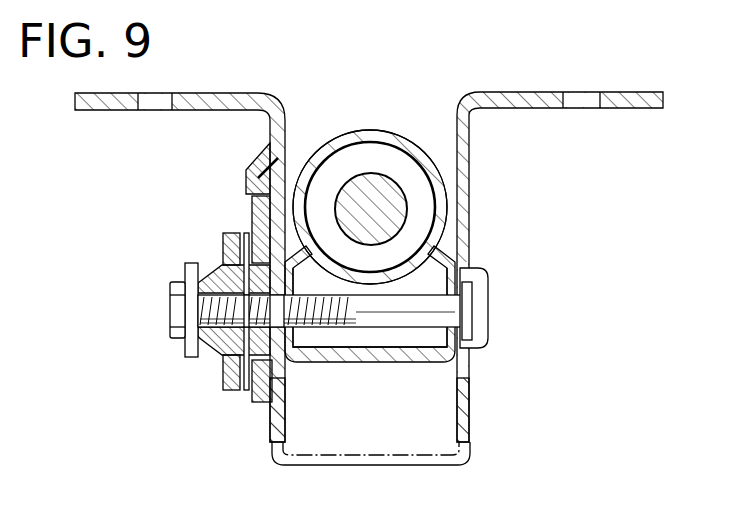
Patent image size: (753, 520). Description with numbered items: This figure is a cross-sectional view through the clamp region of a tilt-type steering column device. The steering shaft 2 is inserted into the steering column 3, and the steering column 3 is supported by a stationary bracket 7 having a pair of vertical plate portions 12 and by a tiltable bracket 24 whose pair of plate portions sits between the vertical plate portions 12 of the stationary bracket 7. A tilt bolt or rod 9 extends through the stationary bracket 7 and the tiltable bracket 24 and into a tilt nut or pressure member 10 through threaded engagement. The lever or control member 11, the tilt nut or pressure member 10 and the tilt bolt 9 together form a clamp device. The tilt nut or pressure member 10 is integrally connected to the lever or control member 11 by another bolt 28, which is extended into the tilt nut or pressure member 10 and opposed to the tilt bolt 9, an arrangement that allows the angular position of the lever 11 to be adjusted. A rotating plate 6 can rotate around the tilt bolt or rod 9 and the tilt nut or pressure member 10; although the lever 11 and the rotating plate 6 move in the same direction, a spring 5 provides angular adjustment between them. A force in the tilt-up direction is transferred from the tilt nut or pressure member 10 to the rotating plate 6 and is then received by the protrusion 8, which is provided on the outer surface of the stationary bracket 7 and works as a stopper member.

The steering shaft 2 is at (386, 182).
The steering column 3 is at (358, 136).
The spring 5 is at (248, 379).
The rotating plate 6 is at (266, 402).
The stationary bracket 7 is at (243, 97).
The protrusion 8 is at (248, 183).
The tilt bolt or rod 9 is at (482, 306).
The tilt nut or pressure member 10 is at (226, 282).
The lever or control member 11 is at (228, 373).
The vertical plate portions 12 is at (280, 413).
The tiltable bracket 24 is at (382, 362).
The another bolt 28 is at (175, 310).